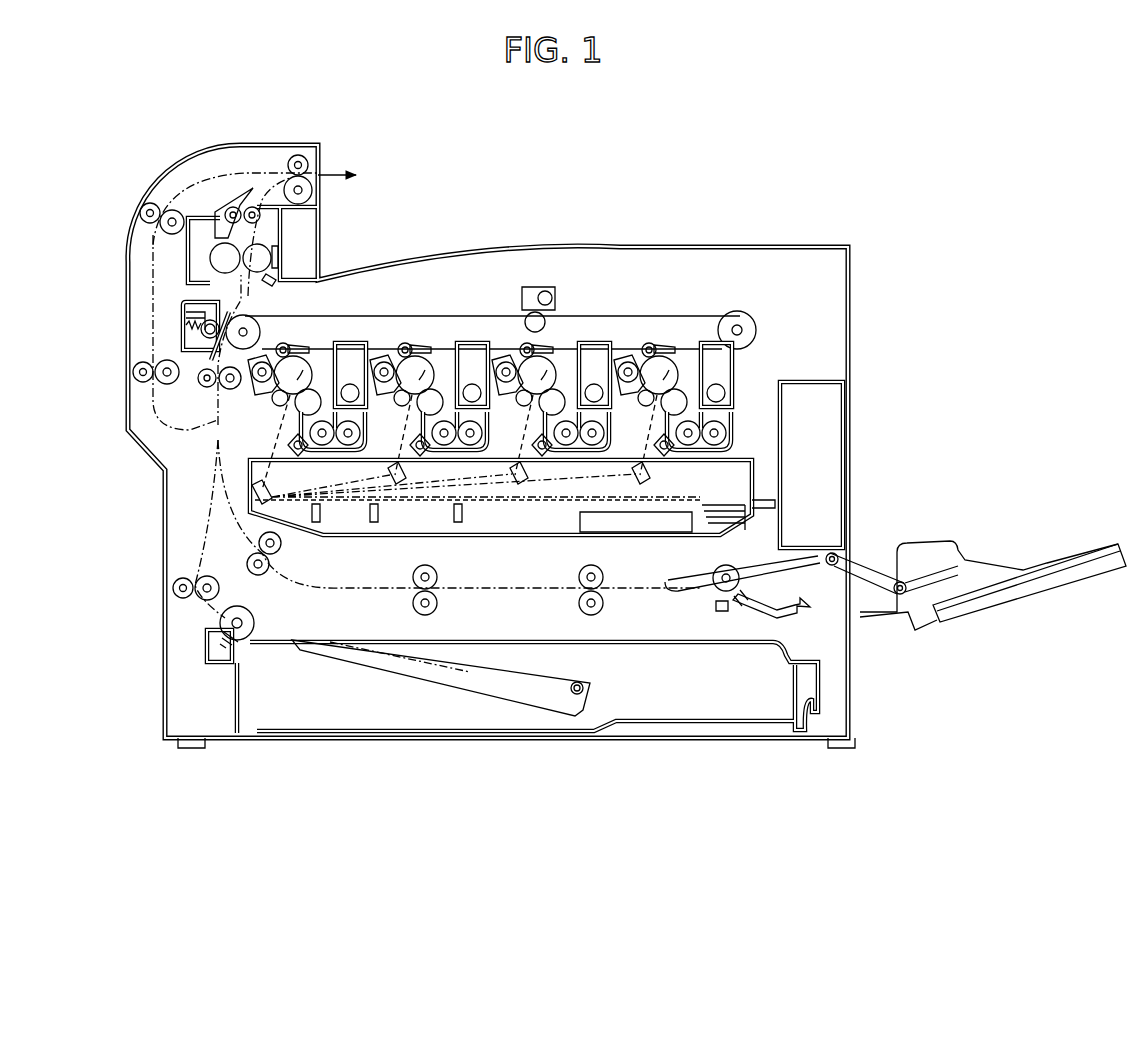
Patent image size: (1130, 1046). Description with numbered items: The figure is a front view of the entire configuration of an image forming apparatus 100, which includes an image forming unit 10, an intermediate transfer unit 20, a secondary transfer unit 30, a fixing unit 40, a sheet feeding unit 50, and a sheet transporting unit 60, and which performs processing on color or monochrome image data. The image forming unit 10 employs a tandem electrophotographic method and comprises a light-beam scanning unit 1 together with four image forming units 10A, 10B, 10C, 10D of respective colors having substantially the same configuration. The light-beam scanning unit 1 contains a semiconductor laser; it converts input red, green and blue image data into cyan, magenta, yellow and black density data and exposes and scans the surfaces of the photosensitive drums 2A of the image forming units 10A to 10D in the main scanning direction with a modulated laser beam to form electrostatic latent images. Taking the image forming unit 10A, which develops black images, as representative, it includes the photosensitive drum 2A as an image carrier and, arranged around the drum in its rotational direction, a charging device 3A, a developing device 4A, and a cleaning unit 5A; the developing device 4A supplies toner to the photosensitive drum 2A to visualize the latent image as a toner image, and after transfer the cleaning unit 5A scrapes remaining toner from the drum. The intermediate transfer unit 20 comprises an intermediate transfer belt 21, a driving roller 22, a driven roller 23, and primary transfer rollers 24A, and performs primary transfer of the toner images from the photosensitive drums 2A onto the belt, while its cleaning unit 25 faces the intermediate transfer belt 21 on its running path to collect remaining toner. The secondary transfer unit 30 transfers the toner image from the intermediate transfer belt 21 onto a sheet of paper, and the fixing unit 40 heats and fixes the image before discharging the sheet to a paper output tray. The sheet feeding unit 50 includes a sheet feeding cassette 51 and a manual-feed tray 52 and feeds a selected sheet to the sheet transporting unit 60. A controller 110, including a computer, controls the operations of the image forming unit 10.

The image forming apparatus 100 is at (862, 192).
The image forming unit 10 is at (571, 352).
The image forming unit 10A is at (313, 352).
The image forming unit 10B is at (456, 312).
The image forming unit 10C is at (578, 312).
The image forming unit 10D is at (698, 312).
The photosensitive drum 2A is at (301, 354).
The charging device 3A is at (256, 407).
The developing device 4A is at (337, 387).
The cleaning unit 5A is at (266, 388).
The light-beam scanning unit 1 is at (652, 537).
The intermediate transfer unit 20 is at (562, 305).
The intermediate transfer belt 21 is at (720, 312).
The driving roller 22 is at (272, 268).
The driven roller 23 is at (748, 318).
The primary transfer roller 24A is at (296, 318).
The cleaning unit 25 is at (522, 294).
The secondary transfer unit 30 is at (176, 300).
The fixing unit 40 is at (202, 212).
The sheet feeding unit 50 is at (666, 623).
The sheet feeding cassette 51 is at (603, 645).
The manual-feed tray 52 is at (995, 572).
The sheet transporting unit 60 is at (182, 516).
The controller 110 is at (780, 538).